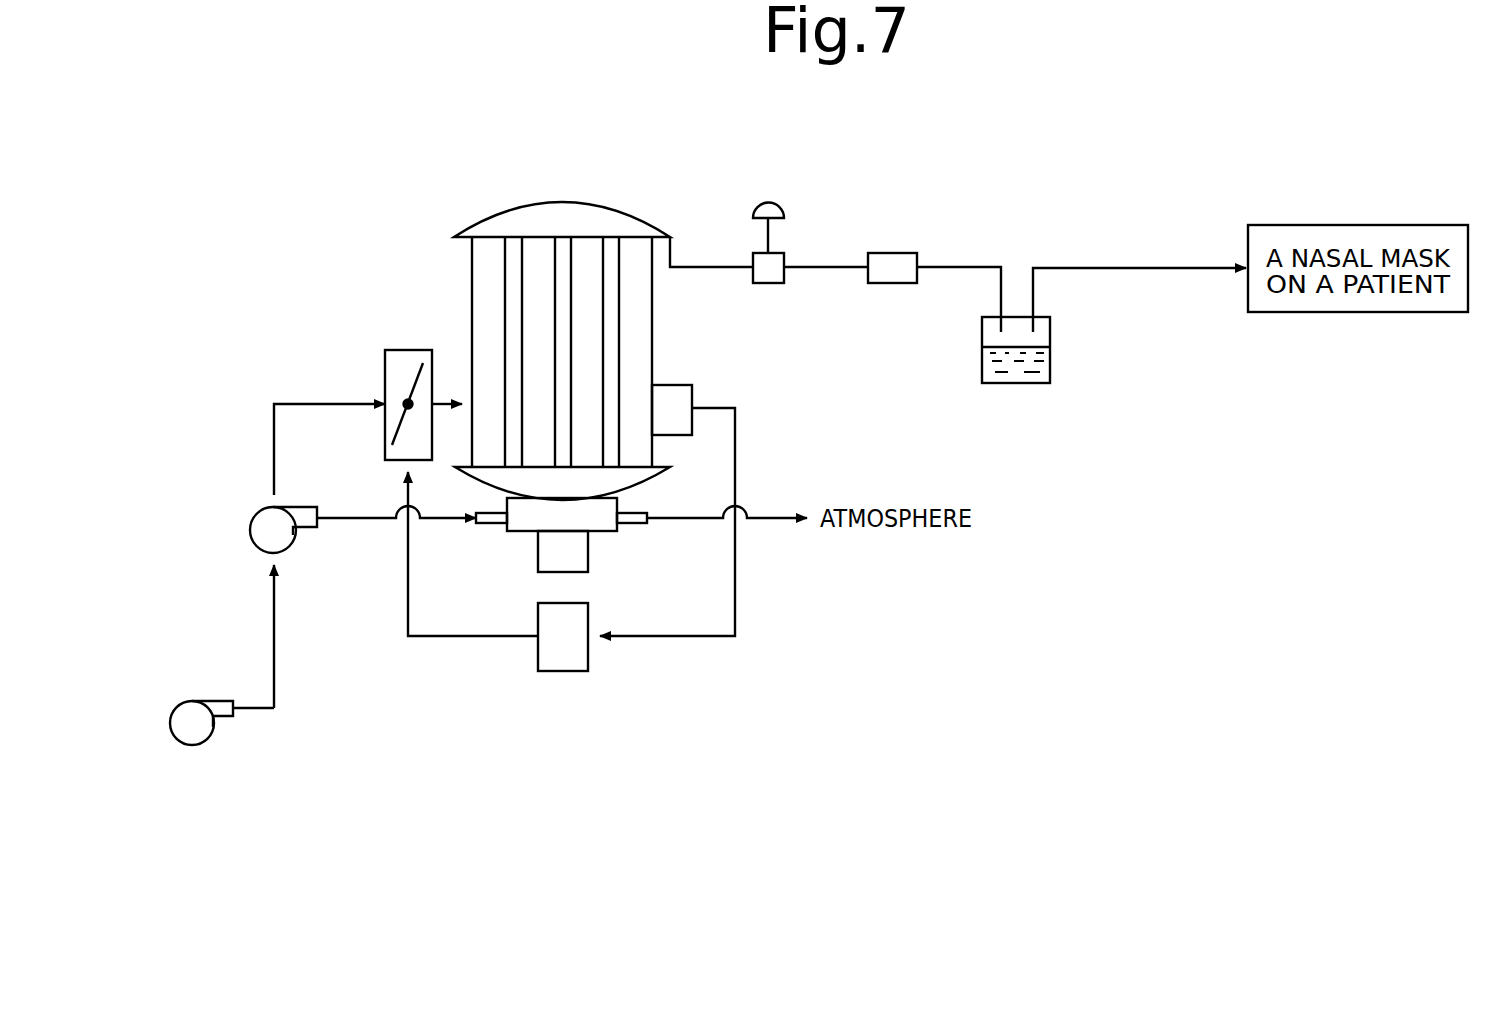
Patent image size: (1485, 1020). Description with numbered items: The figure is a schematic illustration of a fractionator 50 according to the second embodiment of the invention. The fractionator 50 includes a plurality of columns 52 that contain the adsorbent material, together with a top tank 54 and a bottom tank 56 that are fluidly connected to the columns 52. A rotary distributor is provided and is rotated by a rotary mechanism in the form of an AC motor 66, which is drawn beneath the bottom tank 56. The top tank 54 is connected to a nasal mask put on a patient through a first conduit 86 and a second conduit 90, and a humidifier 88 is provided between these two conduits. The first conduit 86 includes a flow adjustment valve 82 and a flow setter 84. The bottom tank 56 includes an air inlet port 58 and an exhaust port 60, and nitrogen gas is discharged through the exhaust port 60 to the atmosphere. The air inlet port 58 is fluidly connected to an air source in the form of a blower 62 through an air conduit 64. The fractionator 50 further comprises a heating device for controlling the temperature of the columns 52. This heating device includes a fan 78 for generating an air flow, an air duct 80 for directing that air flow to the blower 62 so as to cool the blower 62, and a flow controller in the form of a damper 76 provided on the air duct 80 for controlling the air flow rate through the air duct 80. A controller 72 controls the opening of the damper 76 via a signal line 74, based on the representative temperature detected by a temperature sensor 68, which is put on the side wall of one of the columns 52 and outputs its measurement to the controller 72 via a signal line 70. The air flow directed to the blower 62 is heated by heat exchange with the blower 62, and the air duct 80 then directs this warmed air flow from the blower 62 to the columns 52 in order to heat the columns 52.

The fractionator 50 is at (515, 172).
The columns 52 is at (490, 320).
The top tank 54 is at (600, 207).
The bottom tank 56 is at (653, 475).
The air inlet port 58 is at (490, 524).
The exhaust port 60 is at (632, 524).
The blower 62 is at (255, 515).
The air conduit 64 is at (355, 520).
The AC motor 66 is at (538, 560).
The temperature sensor 68 is at (685, 385).
The signal line 70 is at (735, 610).
The controller 72 is at (563, 671).
The signal line 74 is at (410, 638).
The damper 76 is at (385, 360).
The fan 78 is at (195, 700).
The air duct 80 is at (274, 420).
The flow adjustment valve 82 is at (775, 205).
The flow setter 84 is at (893, 253).
The first conduit 86 is at (965, 268).
The humidifier 88 is at (1016, 383).
The second conduit 90 is at (1150, 268).